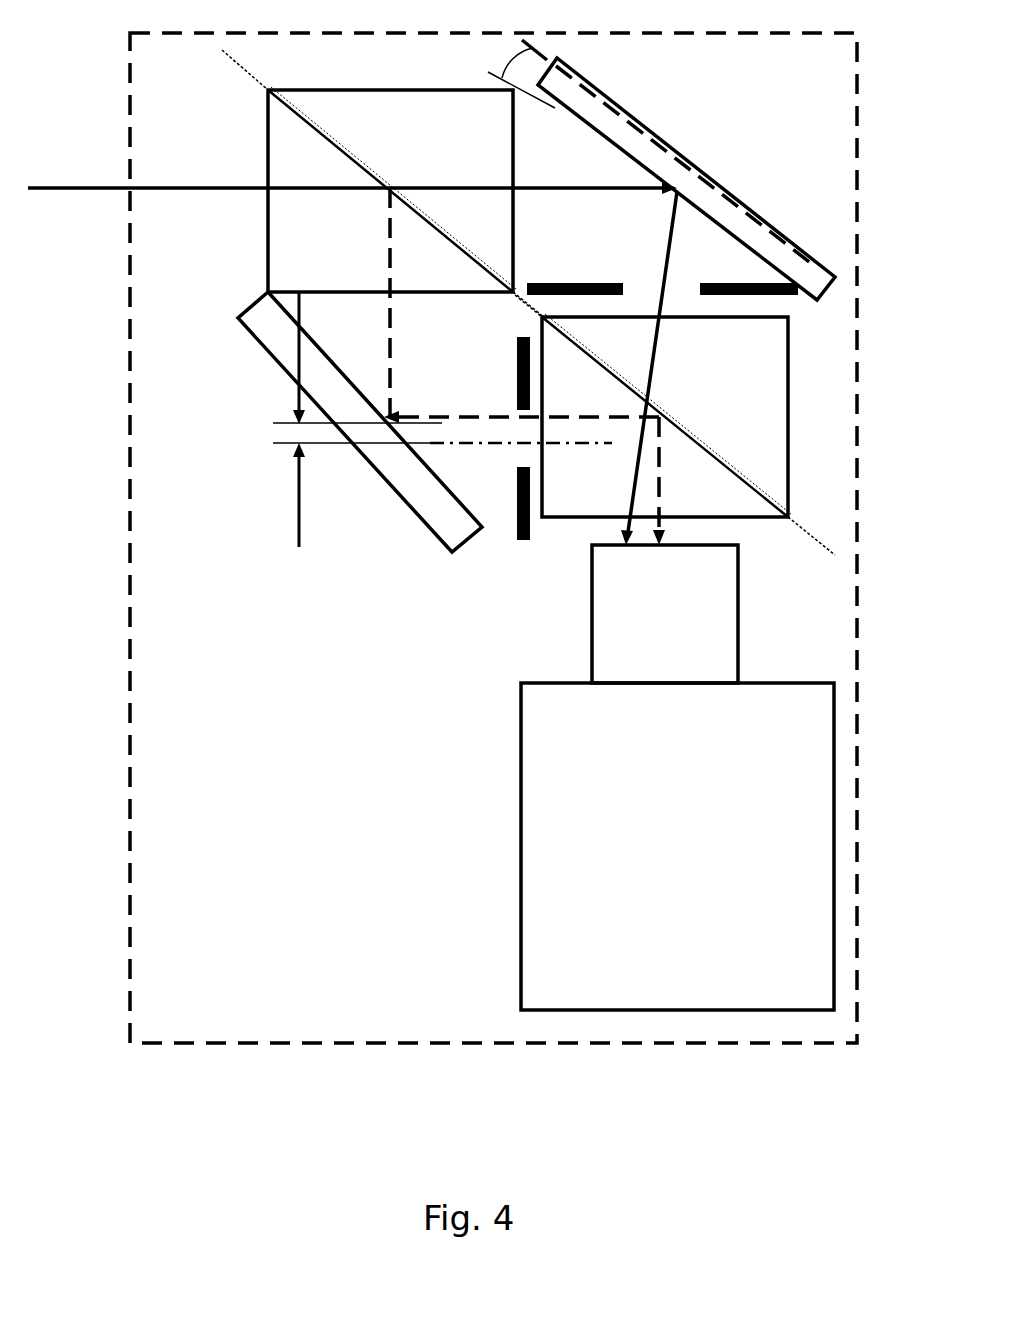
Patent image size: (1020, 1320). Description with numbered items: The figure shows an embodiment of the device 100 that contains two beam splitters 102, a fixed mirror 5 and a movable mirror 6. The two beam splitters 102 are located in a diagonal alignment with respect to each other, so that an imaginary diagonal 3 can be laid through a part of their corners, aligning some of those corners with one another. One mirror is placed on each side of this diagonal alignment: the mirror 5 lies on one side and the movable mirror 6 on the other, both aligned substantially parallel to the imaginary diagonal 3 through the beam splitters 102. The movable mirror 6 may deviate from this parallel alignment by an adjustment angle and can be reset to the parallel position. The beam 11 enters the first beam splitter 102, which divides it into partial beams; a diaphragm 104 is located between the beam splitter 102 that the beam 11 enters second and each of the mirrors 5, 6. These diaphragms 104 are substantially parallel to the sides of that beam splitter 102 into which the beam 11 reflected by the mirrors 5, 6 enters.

The imaginary diagonal 3 is at (245, 67).
The beam 11 is at (103, 192).
The beam splitter 102 is at (287, 250).
The mirror 5 is at (272, 333).
The movable mirror 6 is at (657, 143).
The diaphragm 104 is at (733, 285).
The device 100 is at (818, 1060).